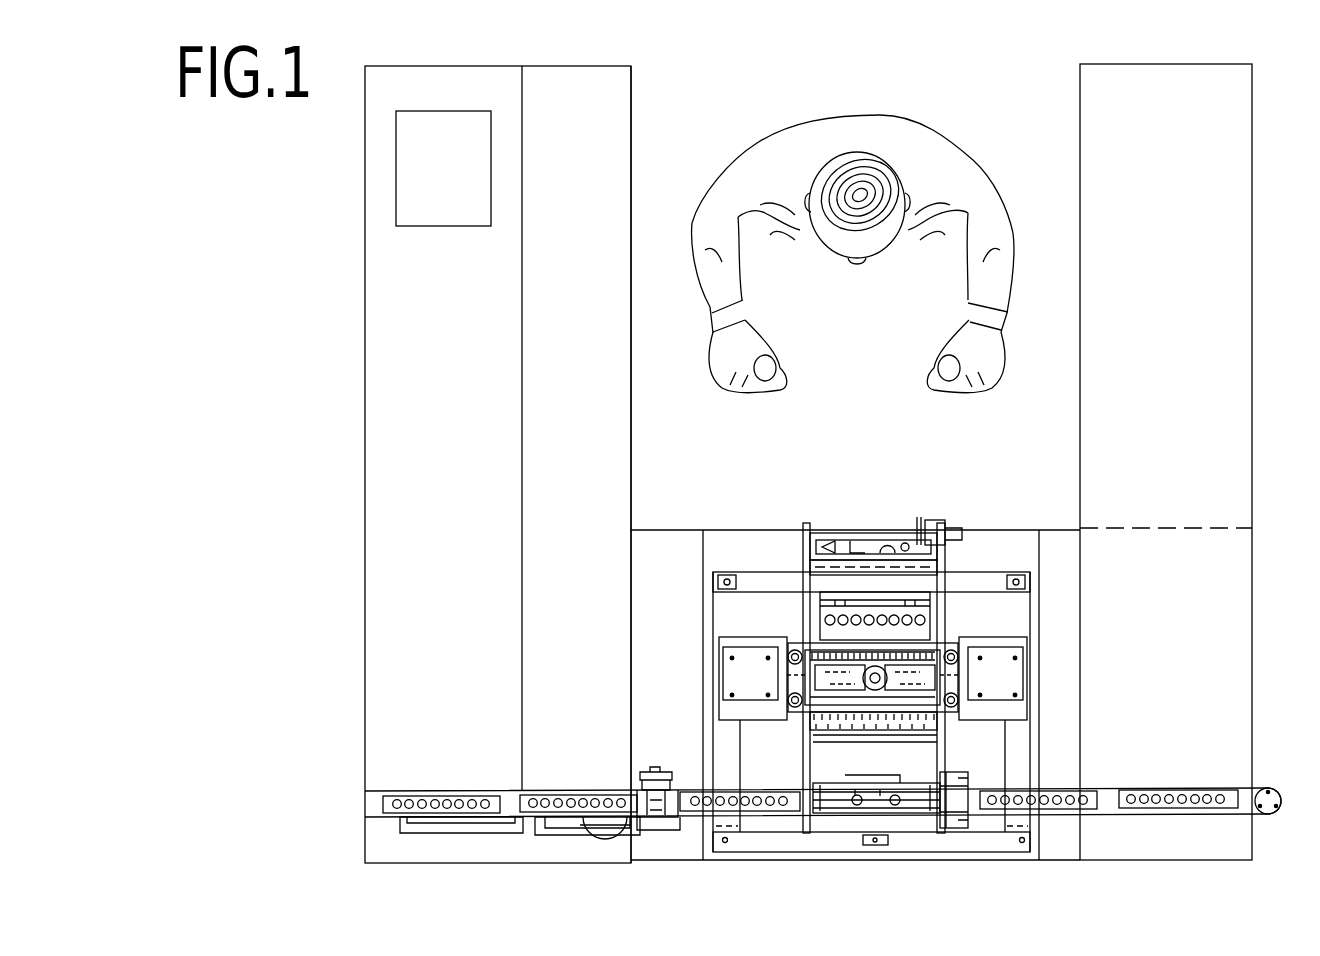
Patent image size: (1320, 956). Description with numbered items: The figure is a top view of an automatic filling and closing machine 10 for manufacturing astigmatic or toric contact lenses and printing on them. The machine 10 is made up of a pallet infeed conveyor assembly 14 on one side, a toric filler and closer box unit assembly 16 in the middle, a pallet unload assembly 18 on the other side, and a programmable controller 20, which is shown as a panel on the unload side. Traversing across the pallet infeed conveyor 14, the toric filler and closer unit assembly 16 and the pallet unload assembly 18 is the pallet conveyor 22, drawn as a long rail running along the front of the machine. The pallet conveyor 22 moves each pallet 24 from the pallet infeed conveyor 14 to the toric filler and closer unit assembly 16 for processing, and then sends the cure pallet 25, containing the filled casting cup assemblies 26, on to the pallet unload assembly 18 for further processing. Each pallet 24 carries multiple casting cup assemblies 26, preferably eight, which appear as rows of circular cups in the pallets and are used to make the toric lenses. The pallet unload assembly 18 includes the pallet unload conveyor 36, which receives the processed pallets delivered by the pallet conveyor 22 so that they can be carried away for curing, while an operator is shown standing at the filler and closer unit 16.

The automatic filling and closing machine 10 is at (357, 855).
The pallet infeed conveyor assembly 14 is at (1172, 58).
The toric filler and closer box unit assembly 16 is at (966, 530).
The pallet unload assembly 18 is at (553, 58).
The programmable controller 20 is at (438, 111).
The pallet conveyor 22 is at (1266, 786).
The pallet 24 is at (1140, 788).
The cure pallet 25 is at (531, 792).
The casting cup assembly 26 is at (460, 796).
The pallet unload conveyor 36 is at (612, 143).